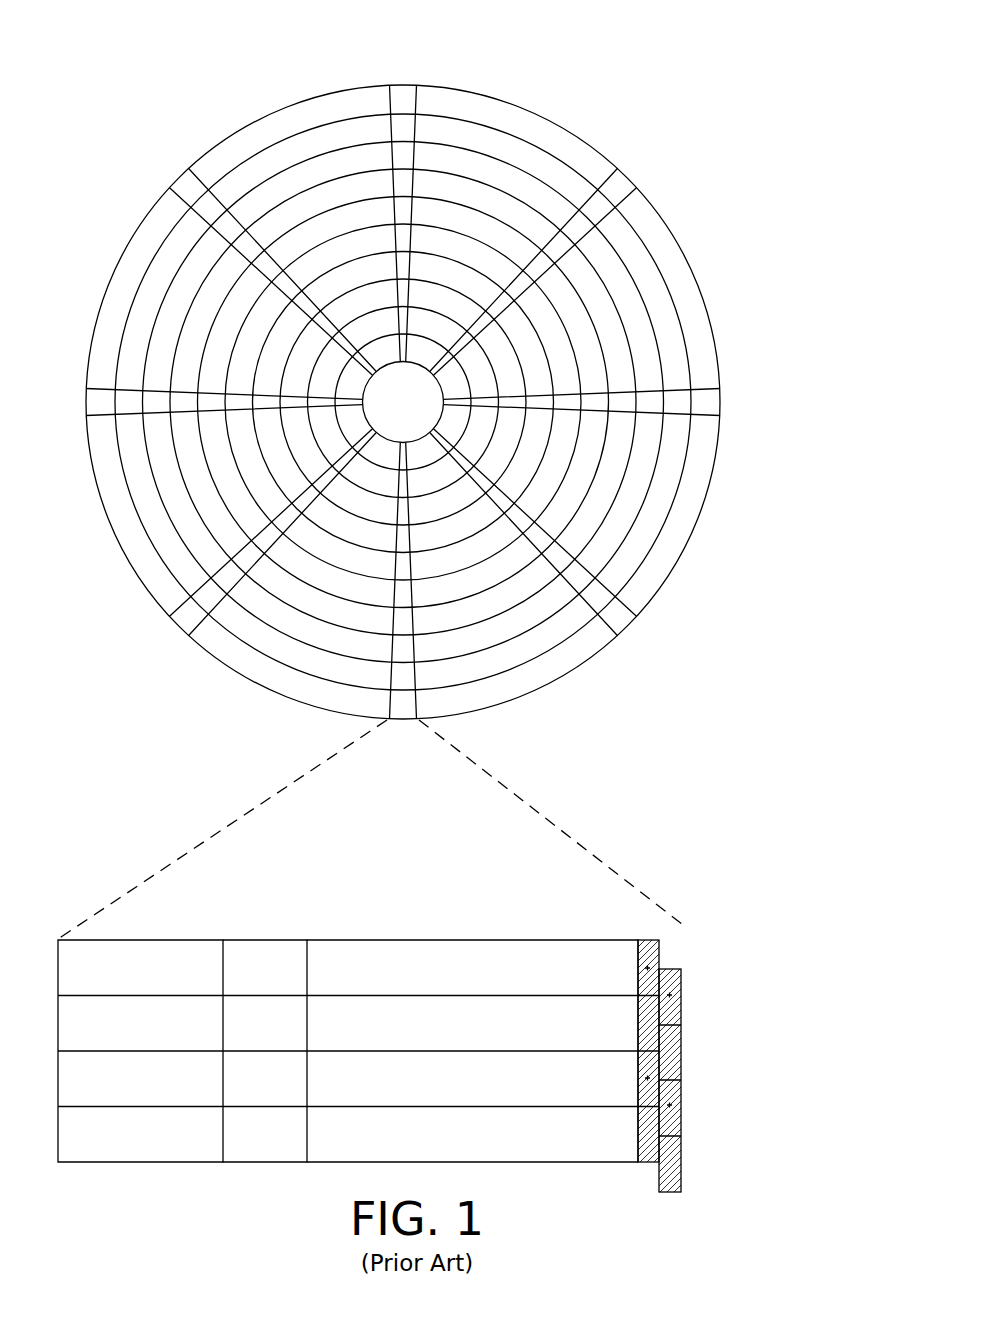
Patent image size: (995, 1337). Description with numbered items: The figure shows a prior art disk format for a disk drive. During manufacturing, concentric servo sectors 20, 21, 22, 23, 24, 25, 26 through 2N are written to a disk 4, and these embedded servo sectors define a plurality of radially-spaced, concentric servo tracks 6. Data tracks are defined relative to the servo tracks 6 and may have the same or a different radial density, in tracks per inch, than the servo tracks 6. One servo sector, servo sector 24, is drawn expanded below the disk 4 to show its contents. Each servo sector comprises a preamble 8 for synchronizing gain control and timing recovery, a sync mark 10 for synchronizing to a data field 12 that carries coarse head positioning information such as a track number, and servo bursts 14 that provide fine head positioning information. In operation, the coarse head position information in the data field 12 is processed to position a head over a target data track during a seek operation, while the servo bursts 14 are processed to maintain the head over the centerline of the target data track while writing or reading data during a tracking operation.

The disk 4 is at (170, 90).
The servo tracks 6 is at (512, 148).
The servo sector 20 is at (403, 95).
The servo sector 21 is at (620, 187).
The servo sector 22 is at (713, 404).
The servo sector 23 is at (620, 622).
The servo sector 24 is at (264, 799).
The servo sector 25 is at (185, 623).
The servo sector 26 is at (90, 401).
The servo sector 2N is at (115, 174).
The preamble 8 is at (148, 940).
The sync mark 10 is at (267, 940).
The data field 12 is at (460, 940).
The servo bursts 14 is at (673, 940).